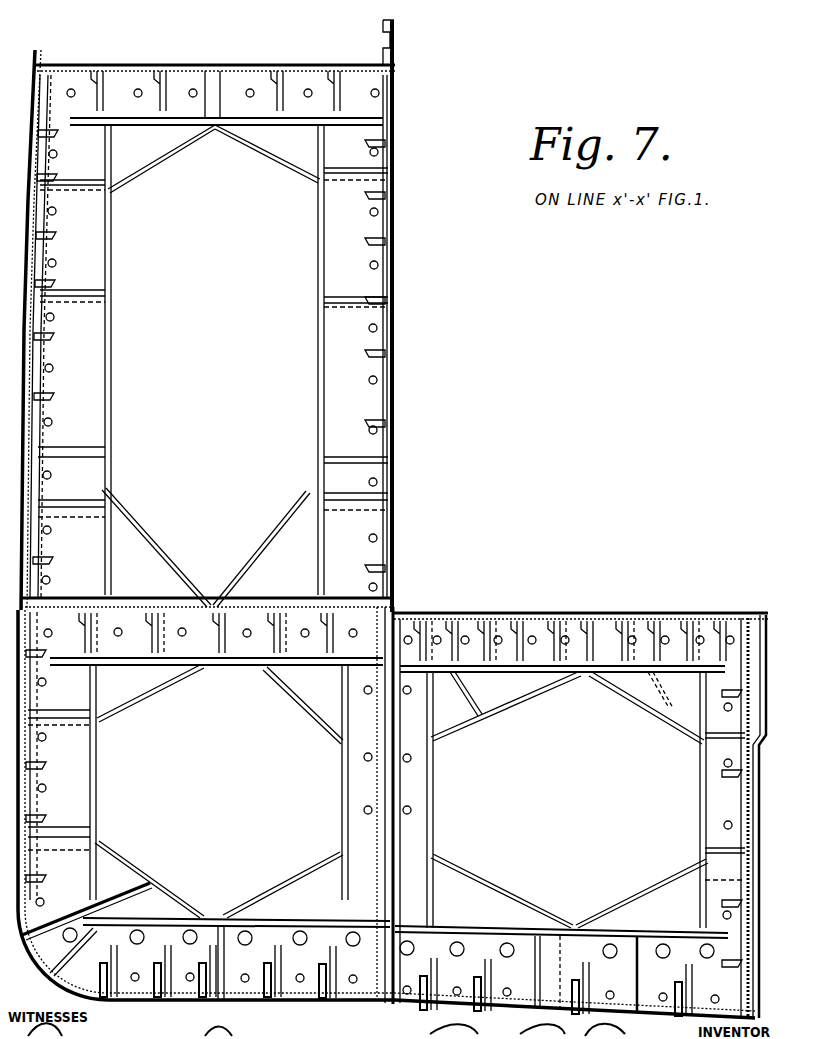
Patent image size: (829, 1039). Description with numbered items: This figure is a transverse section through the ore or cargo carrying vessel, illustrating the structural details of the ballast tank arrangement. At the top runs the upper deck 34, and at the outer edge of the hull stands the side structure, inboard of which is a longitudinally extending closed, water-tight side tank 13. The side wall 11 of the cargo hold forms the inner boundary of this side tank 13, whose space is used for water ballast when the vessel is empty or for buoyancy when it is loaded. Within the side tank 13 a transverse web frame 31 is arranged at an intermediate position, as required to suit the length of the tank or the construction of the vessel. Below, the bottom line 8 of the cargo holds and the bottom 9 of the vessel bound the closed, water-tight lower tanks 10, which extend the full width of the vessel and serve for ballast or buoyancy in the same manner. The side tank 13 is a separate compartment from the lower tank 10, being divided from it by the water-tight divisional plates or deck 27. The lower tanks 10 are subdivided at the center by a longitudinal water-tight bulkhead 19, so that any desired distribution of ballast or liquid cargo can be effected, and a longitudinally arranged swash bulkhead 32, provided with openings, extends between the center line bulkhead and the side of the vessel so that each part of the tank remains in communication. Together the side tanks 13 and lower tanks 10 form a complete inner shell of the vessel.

The bottom line of the cargo holds 8 is at (628, 623).
The bottom of the vessel 9 is at (362, 1001).
The lower tanks 10 is at (375, 822).
The side walls of the cargo holds 11 is at (393, 320).
The side tanks 13 is at (212, 348).
The longitudinal water-tight bulkhead 19 is at (748, 707).
The water-tight divisional plates or deck 27 is at (187, 607).
The transverse web frames 31 is at (88, 437).
The swash bulkhead 32 is at (383, 767).
The upper deck 34 is at (247, 52).